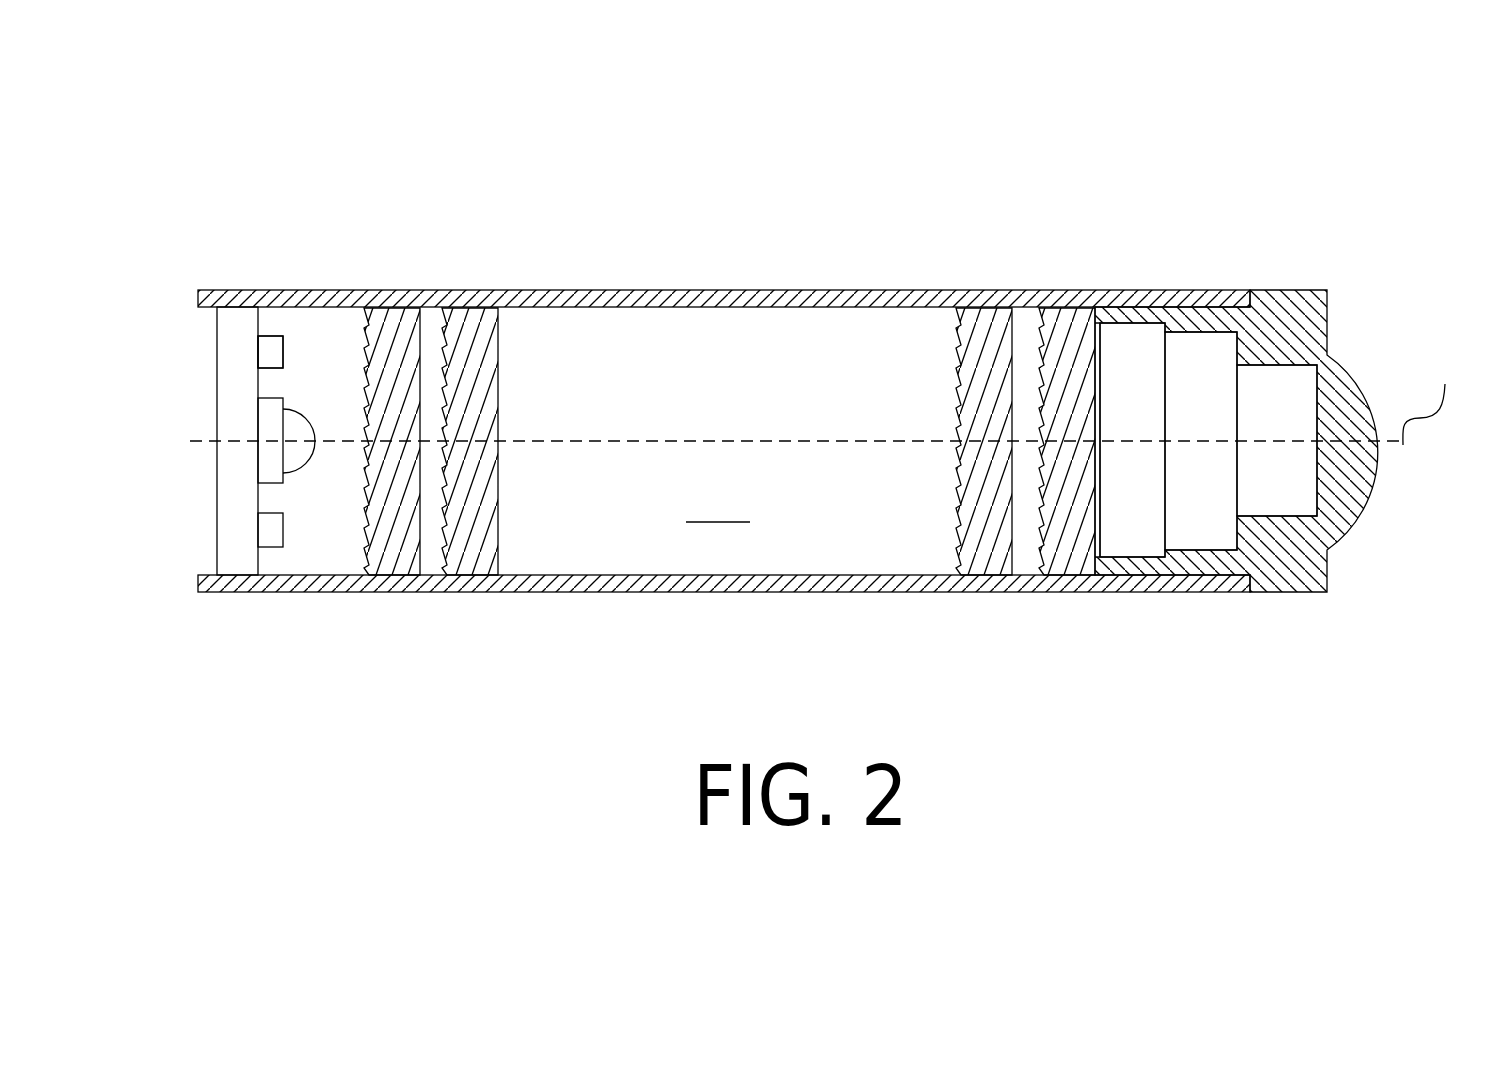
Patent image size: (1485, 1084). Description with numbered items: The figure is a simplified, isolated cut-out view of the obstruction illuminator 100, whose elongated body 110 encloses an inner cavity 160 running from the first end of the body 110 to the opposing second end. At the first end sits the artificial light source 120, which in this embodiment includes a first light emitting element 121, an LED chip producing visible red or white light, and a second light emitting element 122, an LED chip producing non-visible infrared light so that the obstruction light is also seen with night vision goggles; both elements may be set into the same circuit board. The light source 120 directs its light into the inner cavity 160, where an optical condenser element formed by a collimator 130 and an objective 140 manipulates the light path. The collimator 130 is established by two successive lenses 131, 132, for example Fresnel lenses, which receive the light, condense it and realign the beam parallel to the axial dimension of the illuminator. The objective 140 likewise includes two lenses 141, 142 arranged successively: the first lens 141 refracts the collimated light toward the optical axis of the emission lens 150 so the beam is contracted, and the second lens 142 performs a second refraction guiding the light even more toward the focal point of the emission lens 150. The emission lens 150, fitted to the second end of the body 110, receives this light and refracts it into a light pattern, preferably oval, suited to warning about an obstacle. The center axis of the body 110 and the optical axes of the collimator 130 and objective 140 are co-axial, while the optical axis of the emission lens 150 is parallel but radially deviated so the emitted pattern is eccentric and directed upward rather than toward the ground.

The obstruction illuminator 100 is at (663, 252).
The body 110 is at (887, 290).
The artificial light source 120 is at (206, 422).
The first light emitting element 121 is at (293, 452).
The second light emitting element 122 is at (273, 537).
The collimator 130 is at (433, 290).
The first lens of the collimator 131 is at (392, 558).
The second lens of the collimator 132 is at (468, 558).
The objective 140 is at (1027, 290).
The first lens of the objective 141 is at (994, 561).
The second lens of the objective 142 is at (1060, 556).
The emission lens 150 is at (1295, 575).
The inner cavity 160 is at (272, 347).